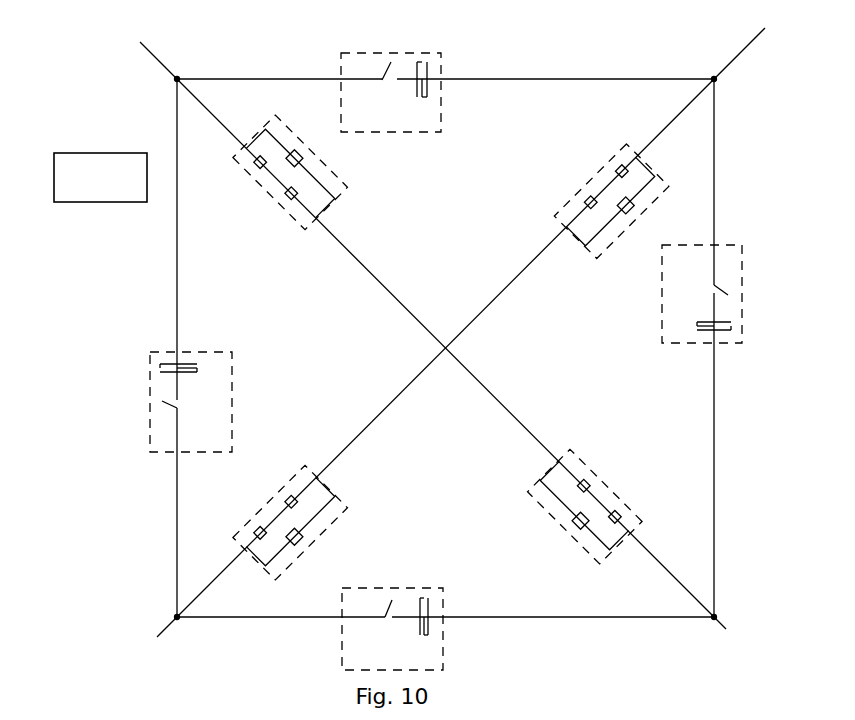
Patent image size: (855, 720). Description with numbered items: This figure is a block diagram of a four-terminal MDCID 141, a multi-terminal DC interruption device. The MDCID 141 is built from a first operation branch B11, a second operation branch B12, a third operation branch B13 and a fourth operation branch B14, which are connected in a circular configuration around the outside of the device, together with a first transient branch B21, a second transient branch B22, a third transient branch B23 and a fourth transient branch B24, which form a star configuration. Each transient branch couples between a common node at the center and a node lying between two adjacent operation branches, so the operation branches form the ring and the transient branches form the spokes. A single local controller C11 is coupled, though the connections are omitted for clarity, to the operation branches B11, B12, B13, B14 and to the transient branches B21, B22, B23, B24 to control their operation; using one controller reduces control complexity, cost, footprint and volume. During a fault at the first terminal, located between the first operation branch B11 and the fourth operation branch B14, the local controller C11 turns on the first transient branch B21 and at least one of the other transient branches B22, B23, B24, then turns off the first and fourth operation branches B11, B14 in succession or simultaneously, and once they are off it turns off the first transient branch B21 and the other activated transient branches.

The four-terminal MDCID 141 is at (117, 54).
The local controller C11 is at (72, 158).
The first operation branch B11 is at (373, 57).
The second operation branch B12 is at (733, 277).
The third operation branch B13 is at (374, 593).
The fourth operation branch B14 is at (156, 421).
The first transient branch B21 is at (252, 160).
The second transient branch B22 is at (624, 152).
The third transient branch B23 is at (543, 495).
The fourth transient branch B24 is at (252, 537).